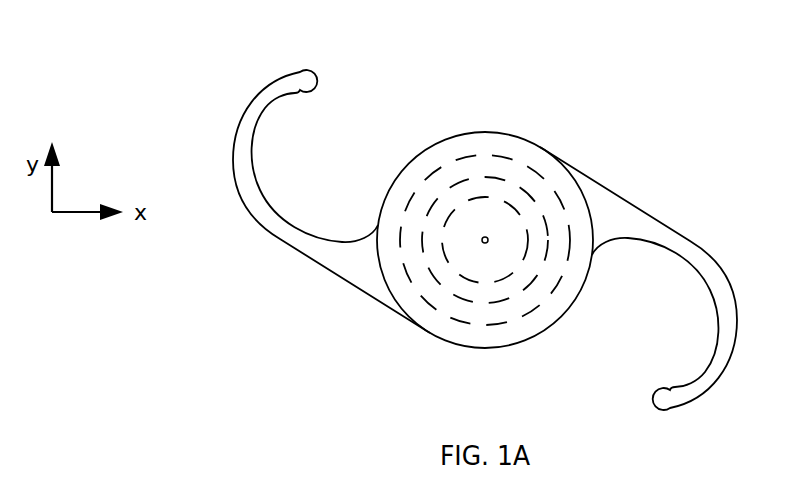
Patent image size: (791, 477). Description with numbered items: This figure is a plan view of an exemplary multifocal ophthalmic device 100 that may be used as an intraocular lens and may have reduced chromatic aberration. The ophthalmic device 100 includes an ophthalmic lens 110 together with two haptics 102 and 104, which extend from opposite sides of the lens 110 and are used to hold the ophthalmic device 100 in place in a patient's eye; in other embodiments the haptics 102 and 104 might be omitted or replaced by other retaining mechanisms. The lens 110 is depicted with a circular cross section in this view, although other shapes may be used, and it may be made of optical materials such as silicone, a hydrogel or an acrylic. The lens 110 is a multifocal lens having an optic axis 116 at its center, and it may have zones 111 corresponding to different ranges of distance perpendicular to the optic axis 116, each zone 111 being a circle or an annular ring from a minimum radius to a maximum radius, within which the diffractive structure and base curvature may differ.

The ophthalmic device 100 is at (508, 36).
The haptic 102 is at (242, 203).
The haptic 104 is at (697, 240).
The ophthalmic lens 110 is at (492, 130).
The zones 111 is at (488, 303).
The optic axis 116 is at (480, 240).